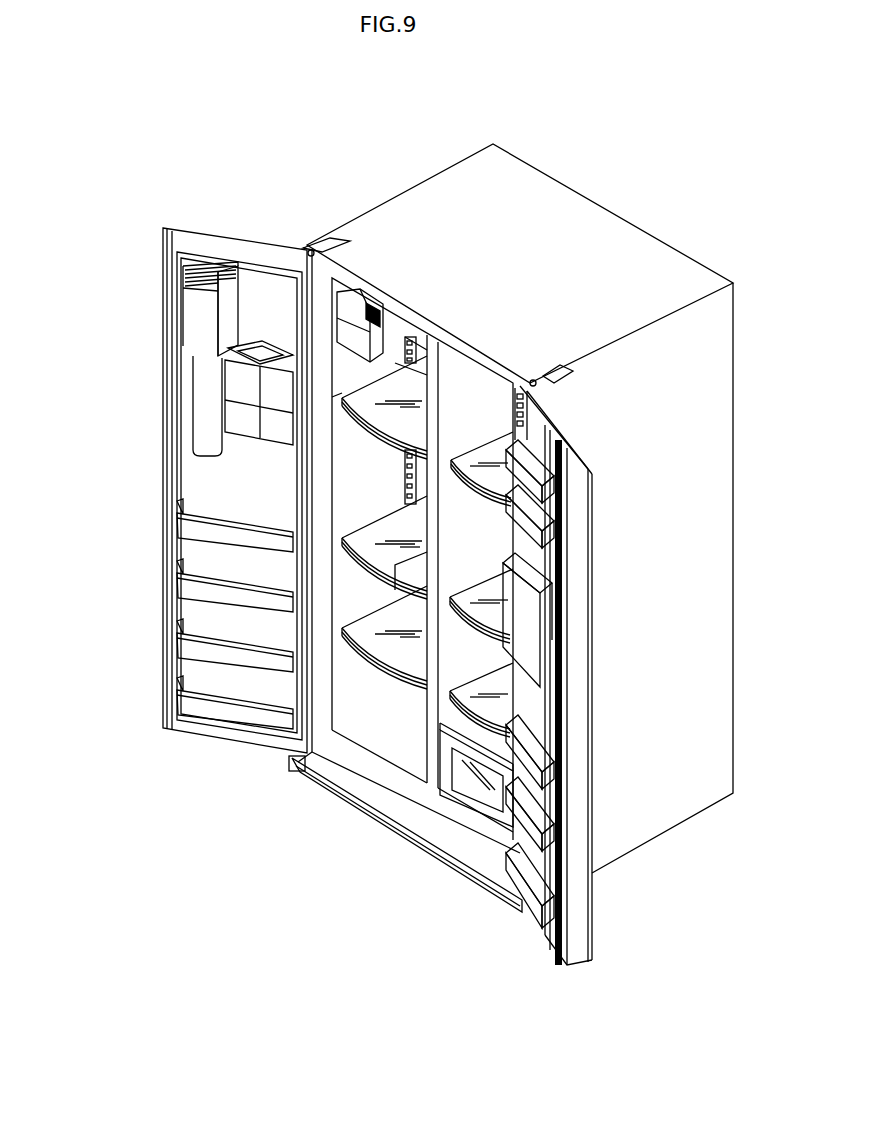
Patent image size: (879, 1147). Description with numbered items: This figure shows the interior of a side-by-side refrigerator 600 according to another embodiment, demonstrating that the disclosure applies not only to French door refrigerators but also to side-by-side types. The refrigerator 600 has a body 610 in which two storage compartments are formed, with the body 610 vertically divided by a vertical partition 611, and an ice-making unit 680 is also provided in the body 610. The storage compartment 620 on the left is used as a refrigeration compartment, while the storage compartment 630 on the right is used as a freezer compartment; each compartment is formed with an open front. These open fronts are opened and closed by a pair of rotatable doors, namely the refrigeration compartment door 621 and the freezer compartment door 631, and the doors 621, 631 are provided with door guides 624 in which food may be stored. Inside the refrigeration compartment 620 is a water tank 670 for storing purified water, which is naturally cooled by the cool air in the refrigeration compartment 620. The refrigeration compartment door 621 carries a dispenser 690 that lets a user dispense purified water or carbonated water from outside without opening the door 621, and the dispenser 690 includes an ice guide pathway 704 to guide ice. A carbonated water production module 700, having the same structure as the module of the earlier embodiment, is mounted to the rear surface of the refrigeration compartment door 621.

The refrigerator 600 is at (320, 121).
The body 610 is at (500, 330).
The vertical partition 611 is at (433, 723).
The storage compartment (refrigeration compartment) 620 is at (387, 359).
The refrigeration compartment door 621 is at (226, 241).
The door guide 624 is at (181, 638).
The storage compartment (freezer compartment) 630 is at (492, 394).
The freezer compartment door 631 is at (590, 918).
The water tank 670 is at (408, 578).
The ice-making unit 680 is at (355, 300).
The dispenser 690 is at (234, 428).
The carbonated water production module 700 is at (197, 318).
The ice guide pathway 704 is at (260, 348).